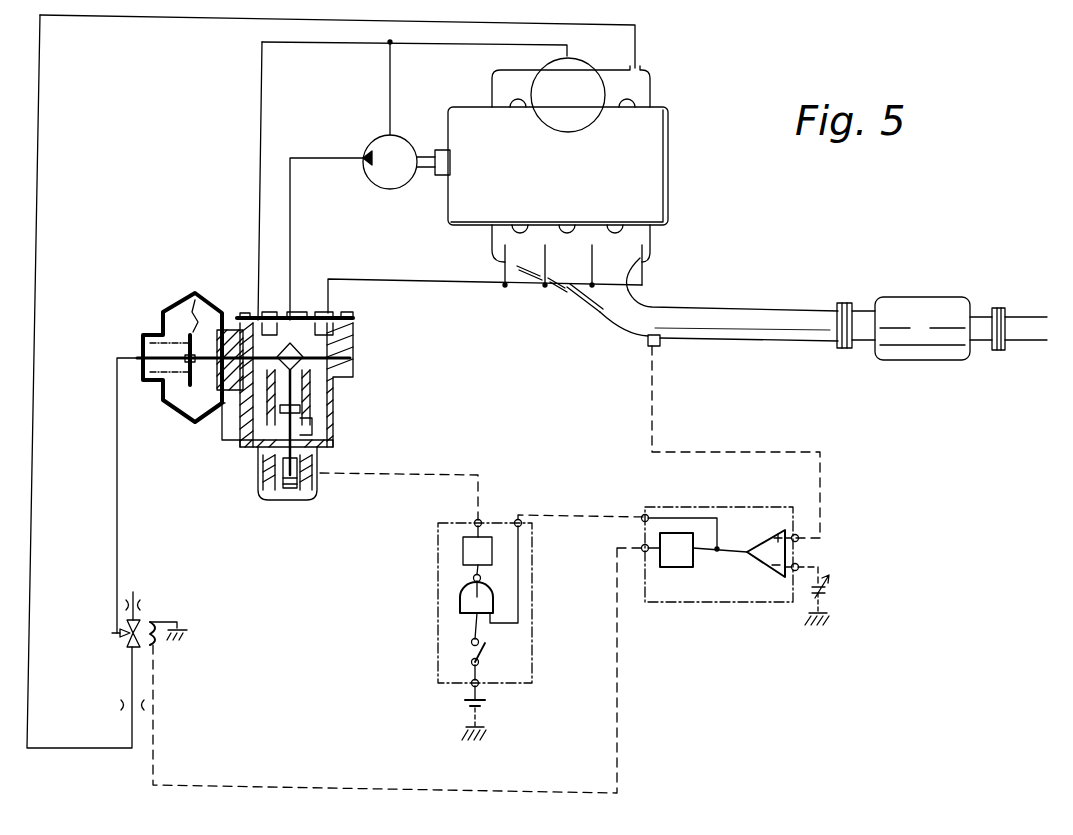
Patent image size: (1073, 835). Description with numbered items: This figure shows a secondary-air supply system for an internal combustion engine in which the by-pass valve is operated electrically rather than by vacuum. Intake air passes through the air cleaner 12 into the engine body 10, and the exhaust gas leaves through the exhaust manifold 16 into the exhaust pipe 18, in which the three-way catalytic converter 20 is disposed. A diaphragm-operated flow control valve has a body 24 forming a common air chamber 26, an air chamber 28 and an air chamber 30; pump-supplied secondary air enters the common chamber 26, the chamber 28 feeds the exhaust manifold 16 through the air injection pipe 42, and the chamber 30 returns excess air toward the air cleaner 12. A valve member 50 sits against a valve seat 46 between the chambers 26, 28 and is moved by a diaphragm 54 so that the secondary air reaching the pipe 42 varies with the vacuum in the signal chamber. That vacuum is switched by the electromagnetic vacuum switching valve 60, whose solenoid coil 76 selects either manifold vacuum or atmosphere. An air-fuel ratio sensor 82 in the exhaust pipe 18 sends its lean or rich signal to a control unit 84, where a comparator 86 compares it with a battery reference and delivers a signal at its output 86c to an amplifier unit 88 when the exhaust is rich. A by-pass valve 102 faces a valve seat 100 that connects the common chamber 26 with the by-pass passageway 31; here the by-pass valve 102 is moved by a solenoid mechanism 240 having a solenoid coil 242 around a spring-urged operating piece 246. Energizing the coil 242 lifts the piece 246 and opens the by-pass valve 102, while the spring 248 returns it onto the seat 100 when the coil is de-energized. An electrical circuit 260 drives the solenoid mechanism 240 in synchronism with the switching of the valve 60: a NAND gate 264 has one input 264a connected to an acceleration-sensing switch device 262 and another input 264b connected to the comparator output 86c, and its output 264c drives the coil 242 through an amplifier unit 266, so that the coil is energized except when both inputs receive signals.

The engine body 10 is at (665, 152).
The air cleaner 12 is at (580, 120).
The exhaust manifold 16 is at (655, 240).
The exhaust pipe 18 is at (750, 307).
The three-way catalytic converter 20 is at (930, 297).
The body 24 is at (345, 400).
The common air chamber 26 is at (300, 396).
The air chamber 28 is at (345, 385).
The air chamber 30 is at (245, 425).
The by-pass passageway 31 is at (270, 470).
The air injection pipe 42 is at (435, 285).
The valve seat 46 is at (345, 325).
The valve member 50 is at (300, 318).
The diaphragm 54 is at (172, 300).
The vacuum switching valve 60 is at (121, 648).
The solenoid coil 76 is at (175, 620).
The air-fuel ratio sensor 82 is at (660, 343).
The control unit 84 is at (710, 602).
The comparator 86 is at (765, 565).
The comparator output 86c is at (735, 552).
The amplifier unit 88 is at (675, 567).
The valve seat 100 is at (240, 450).
The by-pass valve 102 is at (318, 430).
The solenoid mechanism 240 is at (260, 500).
The solenoid coil 242 is at (318, 490).
The operating piece 246 is at (300, 505).
The spring 248 is at (375, 465).
The electrical circuit 260 is at (438, 633).
The switch device 262 is at (470, 655).
The NAND gate 264 is at (460, 600).
The NAND gate input 264a is at (480, 633).
The NAND gate input 264b is at (518, 620).
The NAND gate output 264c is at (473, 578).
The amplifier unit 266 is at (463, 550).